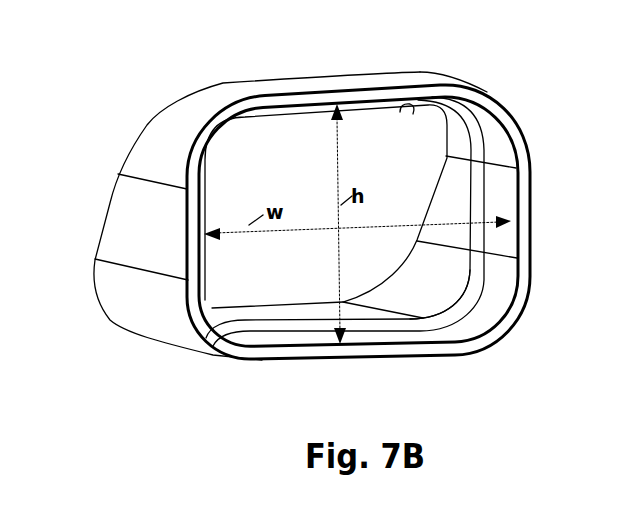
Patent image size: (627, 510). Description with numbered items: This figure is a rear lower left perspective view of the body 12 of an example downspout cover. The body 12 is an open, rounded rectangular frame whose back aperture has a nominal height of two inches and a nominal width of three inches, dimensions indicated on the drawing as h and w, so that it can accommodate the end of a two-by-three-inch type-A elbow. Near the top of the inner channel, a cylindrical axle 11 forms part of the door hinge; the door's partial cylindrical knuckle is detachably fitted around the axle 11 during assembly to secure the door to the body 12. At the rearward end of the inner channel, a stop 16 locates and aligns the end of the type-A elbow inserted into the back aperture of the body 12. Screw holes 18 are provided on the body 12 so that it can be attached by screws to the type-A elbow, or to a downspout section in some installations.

The body 12 is at (530, 100).
The cylindrical axle 11 is at (381, 109).
The stop 16 is at (453, 302).
The screw holes 18 is at (498, 207).